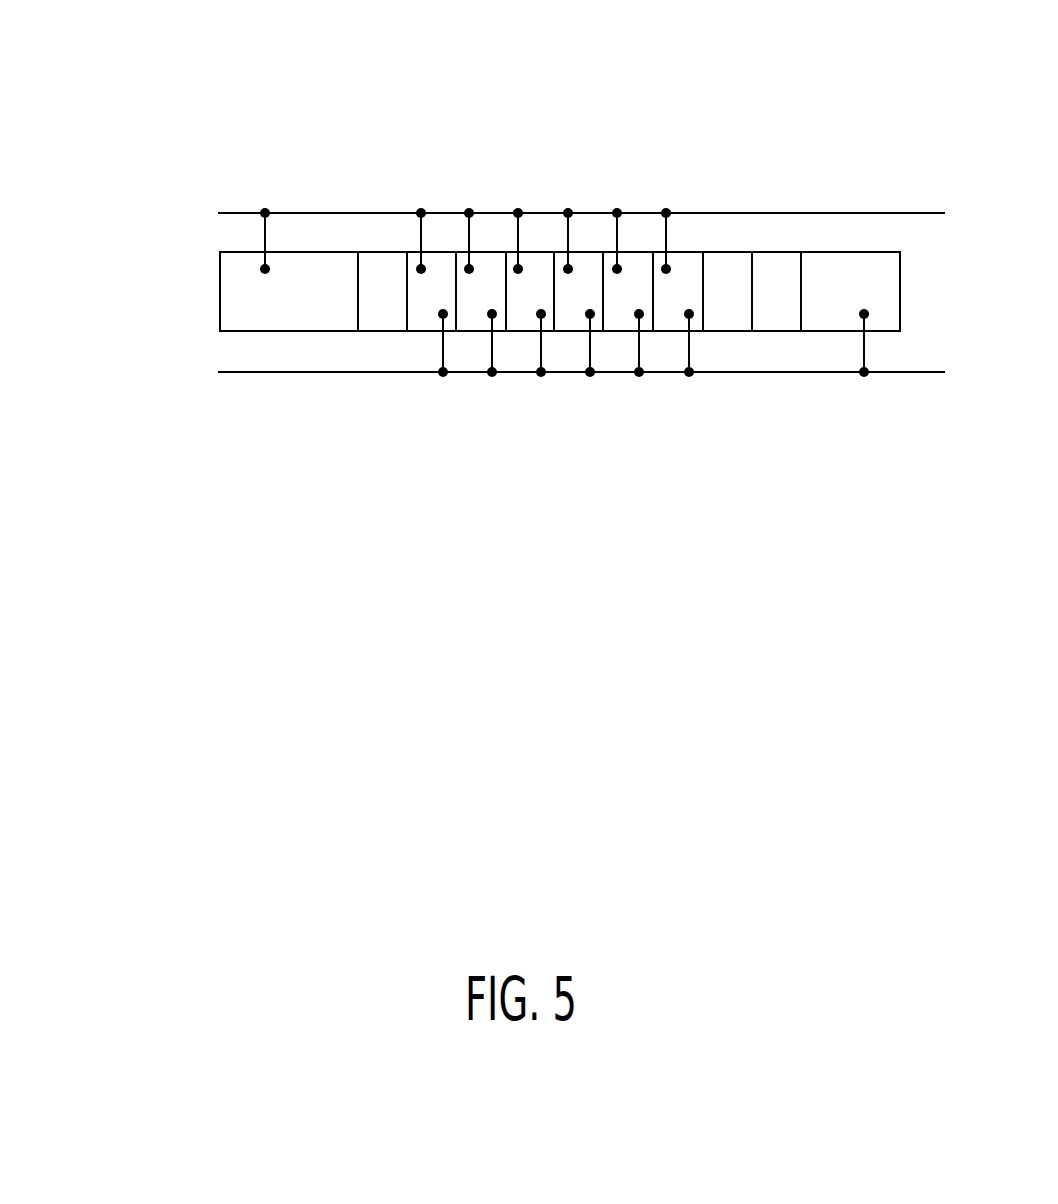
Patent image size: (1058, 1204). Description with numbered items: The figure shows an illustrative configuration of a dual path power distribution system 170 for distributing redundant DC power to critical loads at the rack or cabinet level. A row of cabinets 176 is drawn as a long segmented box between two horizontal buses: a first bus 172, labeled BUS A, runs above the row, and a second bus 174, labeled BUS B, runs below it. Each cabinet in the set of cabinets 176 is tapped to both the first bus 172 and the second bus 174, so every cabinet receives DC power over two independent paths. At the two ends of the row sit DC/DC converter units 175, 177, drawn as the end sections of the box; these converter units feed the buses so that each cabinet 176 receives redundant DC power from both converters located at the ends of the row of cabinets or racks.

The dual path power distribution system 170 is at (350, 100).
The first bus 172 is at (350, 212).
The second bus 174 is at (380, 372).
The DC/DC converter unit 175 is at (290, 328).
The set of cabinets 176 is at (778, 250).
The DC/DC converter unit 177 is at (830, 331).